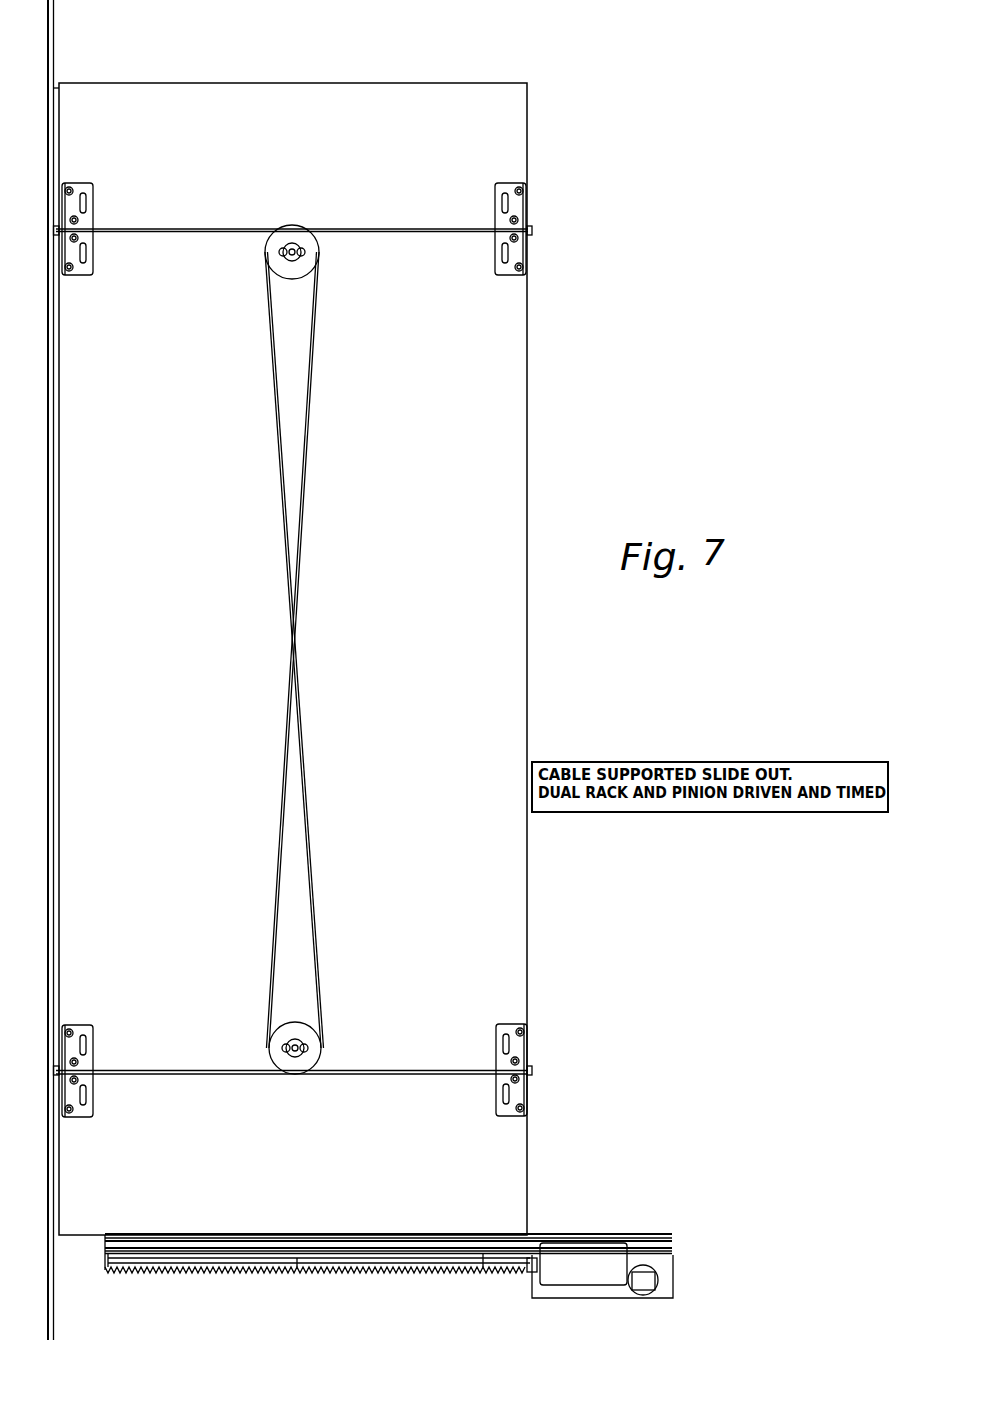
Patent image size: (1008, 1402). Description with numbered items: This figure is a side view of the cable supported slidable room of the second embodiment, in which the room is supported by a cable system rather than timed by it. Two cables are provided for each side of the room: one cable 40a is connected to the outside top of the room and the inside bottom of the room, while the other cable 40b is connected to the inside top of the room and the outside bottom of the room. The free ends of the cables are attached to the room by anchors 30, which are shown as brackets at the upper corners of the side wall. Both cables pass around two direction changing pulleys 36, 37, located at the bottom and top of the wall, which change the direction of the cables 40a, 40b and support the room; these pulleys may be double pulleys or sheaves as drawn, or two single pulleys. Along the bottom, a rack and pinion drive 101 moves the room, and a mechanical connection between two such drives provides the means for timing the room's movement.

The anchor 30 is at (331, 251).
The direction changing pulley 36 is at (330, 1027).
The direction changing pulley 37 is at (322, 226).
The cable 40a is at (292, 647).
The cable 40b is at (292, 685).
The rack and pinion drive 101 is at (405, 1236).